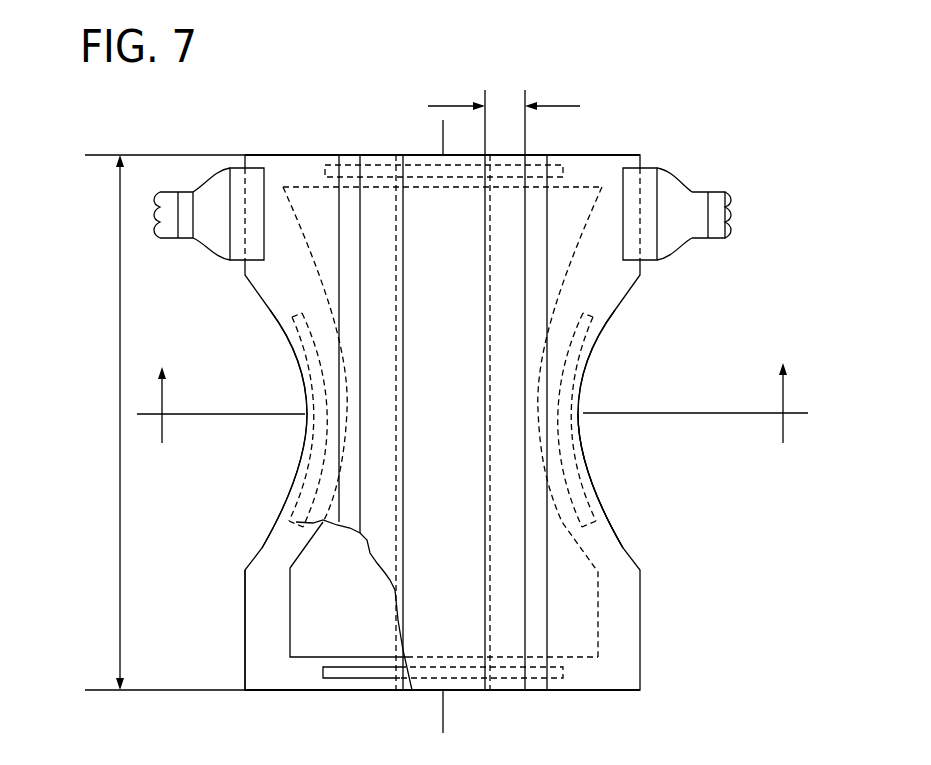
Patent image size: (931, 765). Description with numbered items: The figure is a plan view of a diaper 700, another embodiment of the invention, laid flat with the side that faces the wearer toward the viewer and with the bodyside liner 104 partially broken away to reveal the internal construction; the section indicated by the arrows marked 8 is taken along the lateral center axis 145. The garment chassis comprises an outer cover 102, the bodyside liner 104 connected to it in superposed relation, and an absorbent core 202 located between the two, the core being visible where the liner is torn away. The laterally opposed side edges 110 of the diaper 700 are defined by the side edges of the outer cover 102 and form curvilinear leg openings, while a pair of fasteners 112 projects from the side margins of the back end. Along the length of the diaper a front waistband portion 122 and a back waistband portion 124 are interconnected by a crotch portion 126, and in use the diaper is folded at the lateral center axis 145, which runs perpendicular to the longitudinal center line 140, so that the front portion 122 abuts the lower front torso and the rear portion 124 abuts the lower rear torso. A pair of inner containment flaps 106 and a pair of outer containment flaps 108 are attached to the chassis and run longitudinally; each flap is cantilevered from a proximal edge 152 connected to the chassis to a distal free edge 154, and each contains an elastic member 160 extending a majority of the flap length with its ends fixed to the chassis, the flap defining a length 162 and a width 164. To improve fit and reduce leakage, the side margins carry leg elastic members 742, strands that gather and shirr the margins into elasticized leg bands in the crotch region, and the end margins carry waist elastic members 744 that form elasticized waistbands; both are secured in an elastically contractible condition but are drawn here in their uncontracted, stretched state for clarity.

The diaper 700 is at (150, 140).
The outer cover 102 is at (258, 602).
The bodyside liner 104 is at (433, 613).
The inner containment flaps 106 is at (348, 237).
The outer containment flaps 108 is at (283, 186).
The side edges 110 is at (258, 547).
The fasteners 112 is at (188, 240).
The front waistband portion 122 is at (672, 571).
The back waistband portion 124 is at (670, 294).
The crotch portion 126 is at (618, 474).
The longitudinal center line 140 is at (443, 128).
The lateral center axis 145 is at (700, 412).
The proximal edge 152 is at (525, 202).
The distal free edge 154 is at (485, 255).
The elastic member 160 is at (397, 305).
The length 162 is at (120, 355).
The width 164 is at (560, 106).
The absorbent core 202 is at (289, 648).
The leg elastic members 742 is at (303, 527).
The waist elastic members 744 is at (368, 165).
The section line of FIG. 8 is at (471, 406).